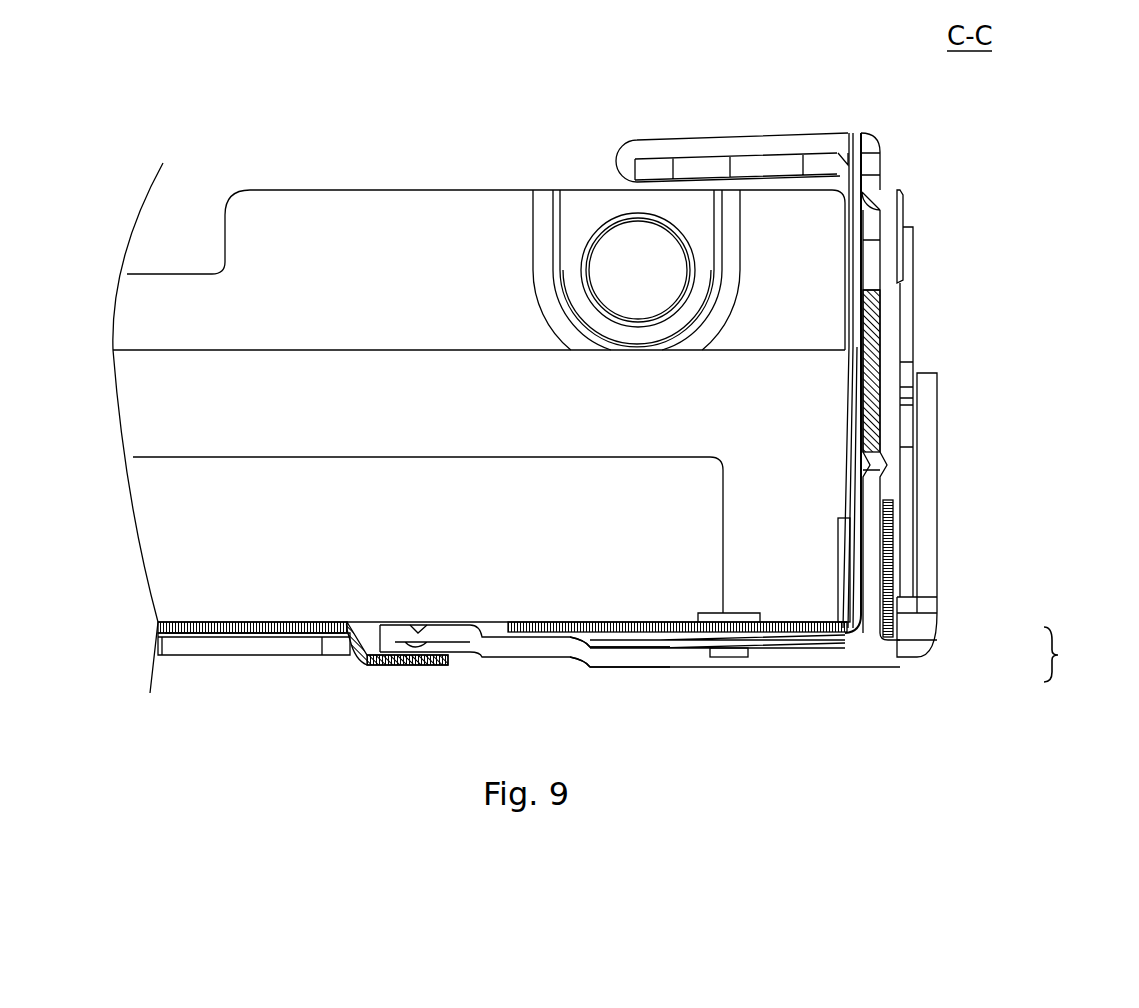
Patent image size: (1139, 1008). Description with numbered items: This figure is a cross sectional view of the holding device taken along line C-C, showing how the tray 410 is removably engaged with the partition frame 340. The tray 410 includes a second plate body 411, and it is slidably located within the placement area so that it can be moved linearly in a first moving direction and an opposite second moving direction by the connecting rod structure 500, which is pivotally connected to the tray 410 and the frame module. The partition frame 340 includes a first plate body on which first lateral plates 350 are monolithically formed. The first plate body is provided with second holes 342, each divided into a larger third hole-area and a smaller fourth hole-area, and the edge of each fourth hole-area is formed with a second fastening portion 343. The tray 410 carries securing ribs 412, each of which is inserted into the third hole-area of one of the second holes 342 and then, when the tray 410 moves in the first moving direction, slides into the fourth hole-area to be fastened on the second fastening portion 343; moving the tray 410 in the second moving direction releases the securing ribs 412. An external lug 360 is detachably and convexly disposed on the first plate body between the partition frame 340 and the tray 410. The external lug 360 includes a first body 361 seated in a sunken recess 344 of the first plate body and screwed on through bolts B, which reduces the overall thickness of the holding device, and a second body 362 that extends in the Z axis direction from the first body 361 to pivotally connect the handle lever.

The partition frame 340 is at (362, 192).
The connecting rod structure 500 is at (888, 303).
The first lateral plate 350 is at (925, 465).
The external lug 360 is at (854, 645).
The first body 361 is at (900, 683).
The second body 362 is at (915, 608).
The tray 410 is at (181, 628).
The second plate body 411 is at (272, 633).
The second hole 342 is at (358, 640).
The second fastening portion 343 is at (395, 643).
The sunken recess 344 is at (597, 647).
The securing rib 412 is at (436, 662).
The bolt B is at (727, 657).